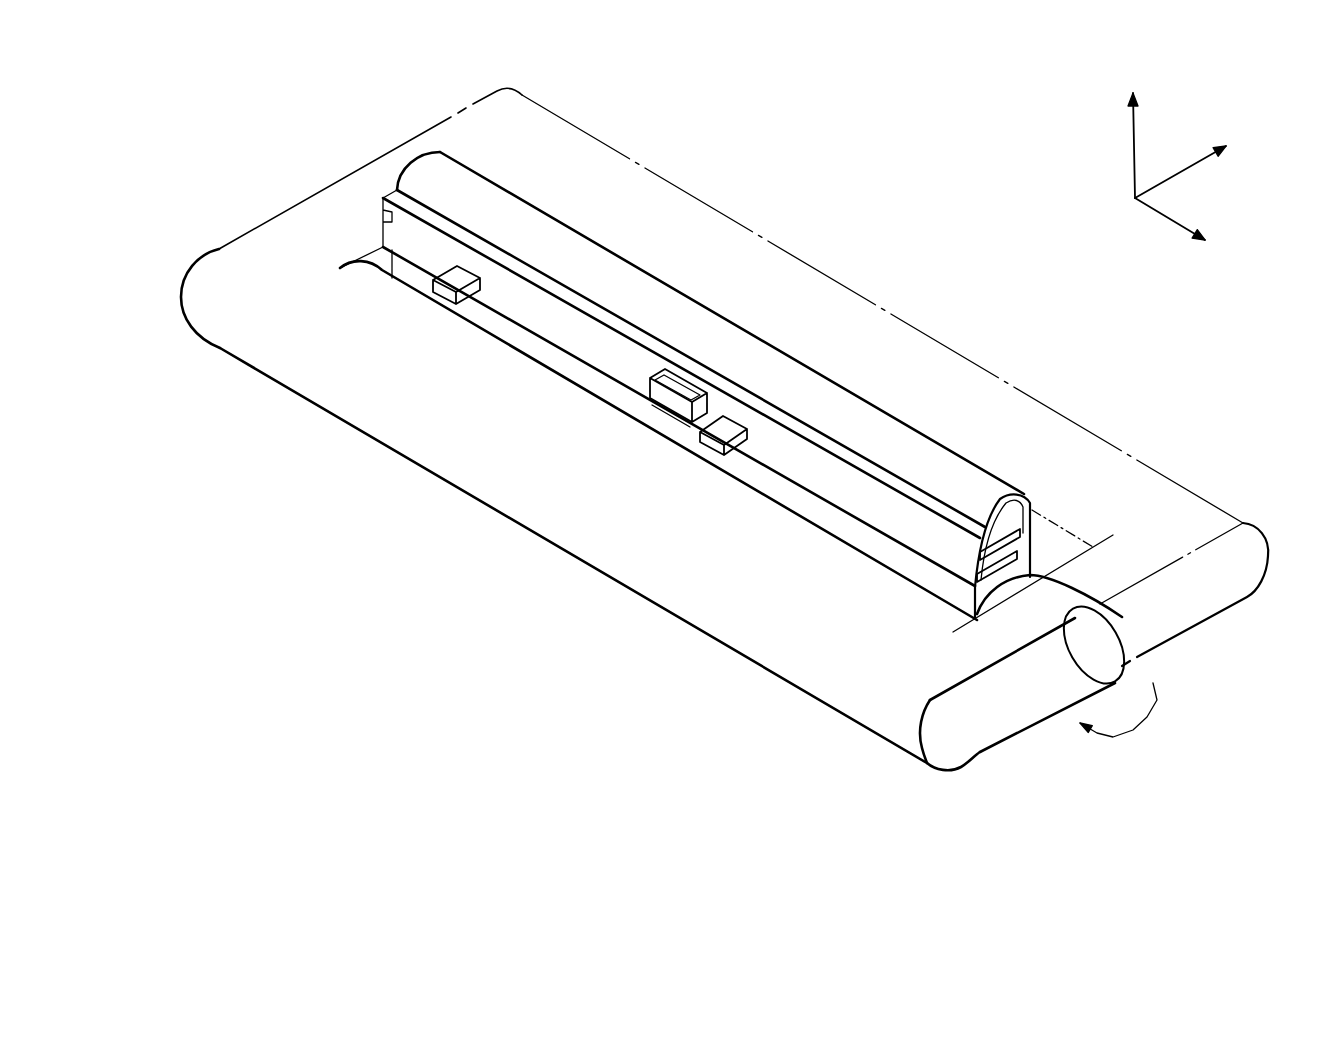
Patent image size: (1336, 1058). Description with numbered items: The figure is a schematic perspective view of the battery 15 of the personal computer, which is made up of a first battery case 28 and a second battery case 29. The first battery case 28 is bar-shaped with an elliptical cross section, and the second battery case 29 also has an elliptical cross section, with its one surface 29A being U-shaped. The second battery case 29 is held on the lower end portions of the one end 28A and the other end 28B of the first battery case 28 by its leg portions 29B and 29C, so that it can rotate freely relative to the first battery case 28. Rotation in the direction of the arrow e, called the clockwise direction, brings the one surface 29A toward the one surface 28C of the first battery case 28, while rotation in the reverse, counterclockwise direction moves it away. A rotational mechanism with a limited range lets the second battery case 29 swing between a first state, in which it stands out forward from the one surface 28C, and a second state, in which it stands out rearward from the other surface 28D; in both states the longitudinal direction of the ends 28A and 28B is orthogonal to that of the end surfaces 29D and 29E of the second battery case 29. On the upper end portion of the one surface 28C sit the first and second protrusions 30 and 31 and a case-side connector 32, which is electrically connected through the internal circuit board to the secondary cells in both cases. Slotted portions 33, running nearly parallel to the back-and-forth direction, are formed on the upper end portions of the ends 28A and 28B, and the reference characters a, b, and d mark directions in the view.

The battery 15 is at (501, 646).
The first battery case 28 is at (813, 360).
The one end of the first battery case 28A is at (1023, 559).
The other end of the first battery case 28B is at (404, 159).
The one surface of the first battery case 28C is at (808, 512).
The other surface of the first battery case 28D is at (968, 457).
The second battery case 29 is at (817, 650).
The one surface of the second battery case 29A is at (519, 408).
The leg portion 29B is at (971, 655).
The leg portion 29C is at (341, 216).
The end surface of the second battery case 29D is at (951, 745).
The end surface of the second battery case 29E is at (245, 236).
The first protrusion 30 is at (703, 442).
The second protrusion 31 is at (435, 282).
The case-side connector 32 is at (650, 400).
The slotted portion 33 is at (962, 580).
The axis a is at (1177, 170).
The axis b is at (1150, 210).
The axis d is at (1133, 145).
The arrow e is at (1153, 723).